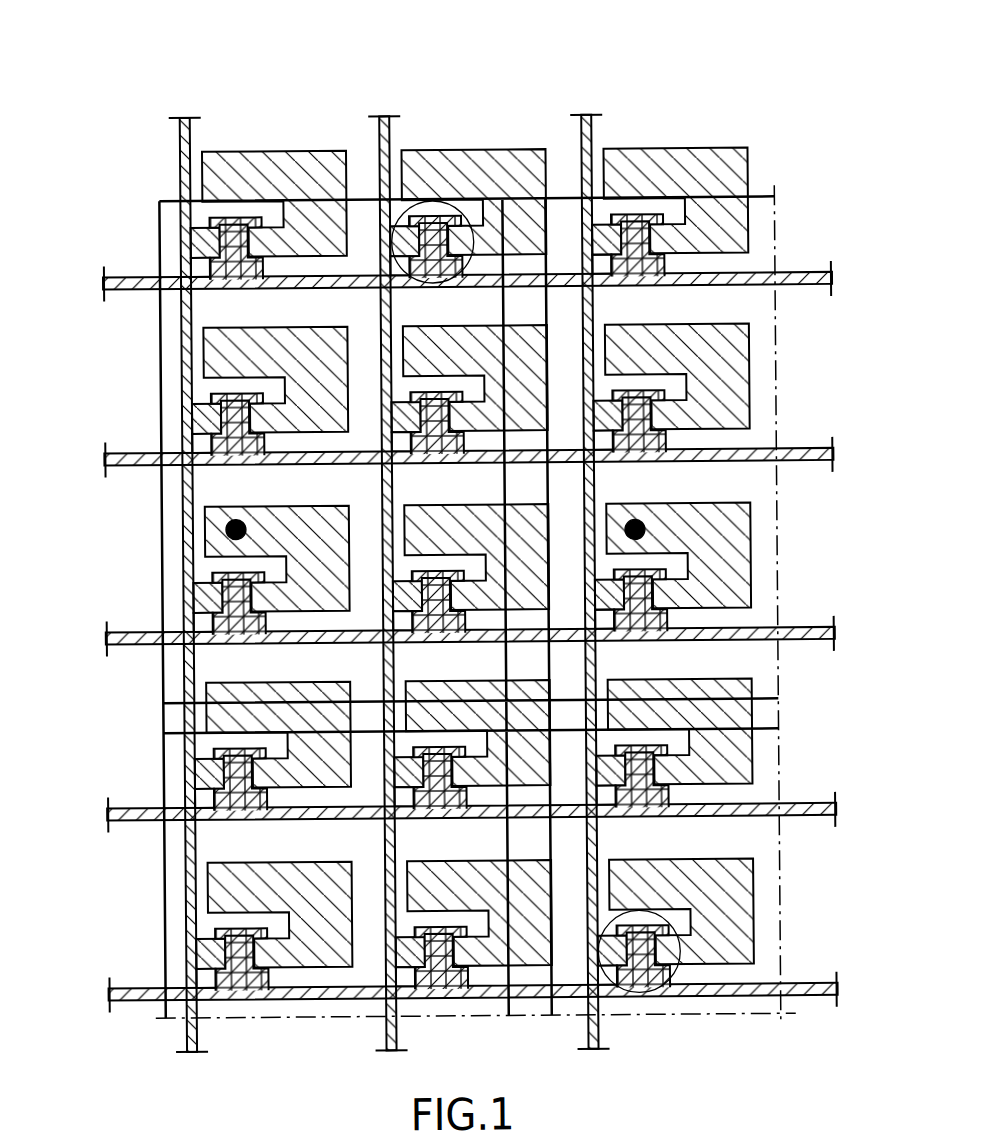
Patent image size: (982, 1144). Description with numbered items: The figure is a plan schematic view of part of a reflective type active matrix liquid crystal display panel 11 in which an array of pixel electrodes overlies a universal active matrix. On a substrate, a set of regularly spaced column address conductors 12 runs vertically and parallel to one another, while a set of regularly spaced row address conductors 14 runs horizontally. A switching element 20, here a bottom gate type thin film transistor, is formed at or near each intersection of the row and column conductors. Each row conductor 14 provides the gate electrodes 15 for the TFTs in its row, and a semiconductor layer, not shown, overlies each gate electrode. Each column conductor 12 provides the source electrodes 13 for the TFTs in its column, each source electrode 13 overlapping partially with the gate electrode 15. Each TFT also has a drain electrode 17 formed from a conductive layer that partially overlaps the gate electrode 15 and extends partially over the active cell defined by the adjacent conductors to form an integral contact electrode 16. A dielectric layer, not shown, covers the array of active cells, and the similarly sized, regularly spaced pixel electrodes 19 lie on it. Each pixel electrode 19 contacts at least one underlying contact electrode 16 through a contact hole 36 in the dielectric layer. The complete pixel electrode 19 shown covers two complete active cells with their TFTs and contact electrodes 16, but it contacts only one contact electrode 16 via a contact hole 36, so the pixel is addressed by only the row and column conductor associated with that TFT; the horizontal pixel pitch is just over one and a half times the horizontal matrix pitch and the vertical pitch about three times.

The active matrix liquid crystal display panel 11 is at (462, 543).
The column address conductor 12 is at (592, 118).
The source electrode 13 is at (612, 249).
The row address conductor 14 is at (107, 279).
The gate electrode 15 is at (236, 800).
The contact electrode 16 is at (746, 182).
The drain electrode 17 is at (661, 244).
The pixel electrode 19 is at (777, 237).
The switching element 20 is at (439, 202).
The contact hole 36 is at (224, 531).